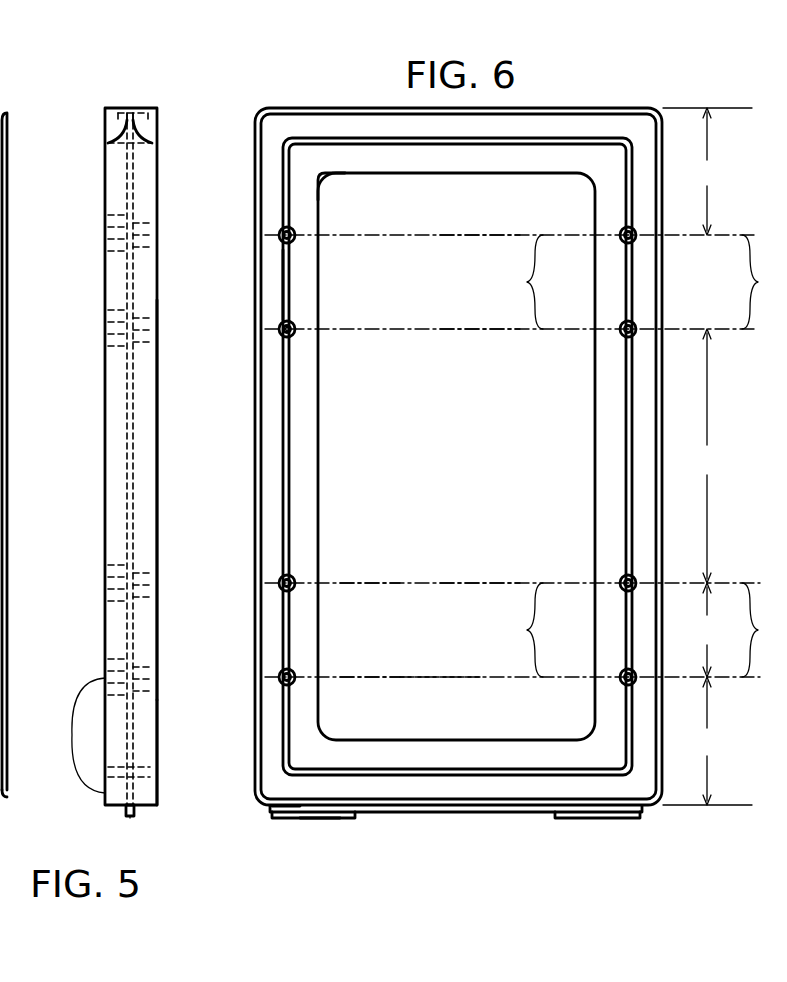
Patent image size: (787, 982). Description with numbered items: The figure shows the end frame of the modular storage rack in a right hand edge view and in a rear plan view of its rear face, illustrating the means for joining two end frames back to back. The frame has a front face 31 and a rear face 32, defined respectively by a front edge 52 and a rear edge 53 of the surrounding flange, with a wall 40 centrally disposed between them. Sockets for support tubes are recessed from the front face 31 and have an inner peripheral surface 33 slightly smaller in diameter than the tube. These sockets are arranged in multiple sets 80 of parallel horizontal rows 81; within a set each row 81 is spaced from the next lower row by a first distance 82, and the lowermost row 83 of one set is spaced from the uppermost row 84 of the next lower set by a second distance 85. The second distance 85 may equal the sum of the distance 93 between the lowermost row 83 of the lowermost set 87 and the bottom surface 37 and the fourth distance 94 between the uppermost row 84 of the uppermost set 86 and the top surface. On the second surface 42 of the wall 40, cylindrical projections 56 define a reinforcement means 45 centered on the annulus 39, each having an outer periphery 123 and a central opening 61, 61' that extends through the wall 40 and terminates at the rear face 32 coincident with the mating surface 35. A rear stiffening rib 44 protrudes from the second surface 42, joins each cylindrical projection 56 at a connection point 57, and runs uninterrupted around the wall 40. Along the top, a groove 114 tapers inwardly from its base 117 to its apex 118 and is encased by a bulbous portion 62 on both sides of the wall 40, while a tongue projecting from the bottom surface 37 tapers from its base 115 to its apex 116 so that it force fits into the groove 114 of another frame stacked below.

In FIG. 5, the front face 31 is at (78, 735).
In FIG. 5, the rear face 32 is at (157, 730).
In FIG. 5, the inner peripheral surface 33 is at (118, 222).
In FIG. 5, the mating surface 35 is at (157, 292).
In FIG. 6, the bottom surface 37 is at (492, 810).
In FIG. 6, the annulus 39 is at (612, 442).
In FIG. 6, the wall 40 is at (305, 455).
In FIG. 6, the second surface 42 is at (315, 180).
In FIG. 6, the rear stiffening rib 44 is at (289, 292).
In FIG. 6, the reinforcement means 45 is at (292, 240).
In FIG. 5, the front edge 52 is at (104, 455).
In FIG. 5, the rear edge 53 is at (155, 450).
In FIG. 6, the rear edge 53 is at (662, 430).
In FIG. 6, the cylindrical projection 56 is at (618, 338).
In FIG. 6, the connection point 57 is at (292, 338).
In FIG. 6, the opening 61 is at (325, 636).
In FIG. 6, the opening 61' is at (594, 630).
In FIG. 5, the bulbous portion 62 is at (152, 143).
In FIG. 6, the set of sockets 80 is at (752, 700).
In FIG. 6, the row 81 is at (375, 677).
In FIG. 6, the first distance 82 is at (706, 630).
In FIG. 6, the lowermost row 83 is at (432, 677).
In FIG. 6, the uppermost row 84 is at (462, 580).
In FIG. 6, the second distance 85 is at (706, 456).
In FIG. 6, the uppermost set 86 is at (520, 282).
In FIG. 6, the lowermost set 87 is at (520, 630).
In FIG. 6, the distance 93 is at (707, 741).
In FIG. 6, the fourth distance 94 is at (707, 171).
In FIG. 5, the groove 114 is at (135, 110).
In FIG. 5, the base 115 is at (133, 808).
In FIG. 6, the base 115 is at (293, 808).
In FIG. 5, the apex 116 is at (130, 818).
In FIG. 6, the apex 116 is at (308, 816).
In FIG. 5, the base 117 is at (130, 110).
In FIG. 5, the apex 118 is at (130, 118).
In FIG. 6, the outer periphery 123 is at (292, 578).